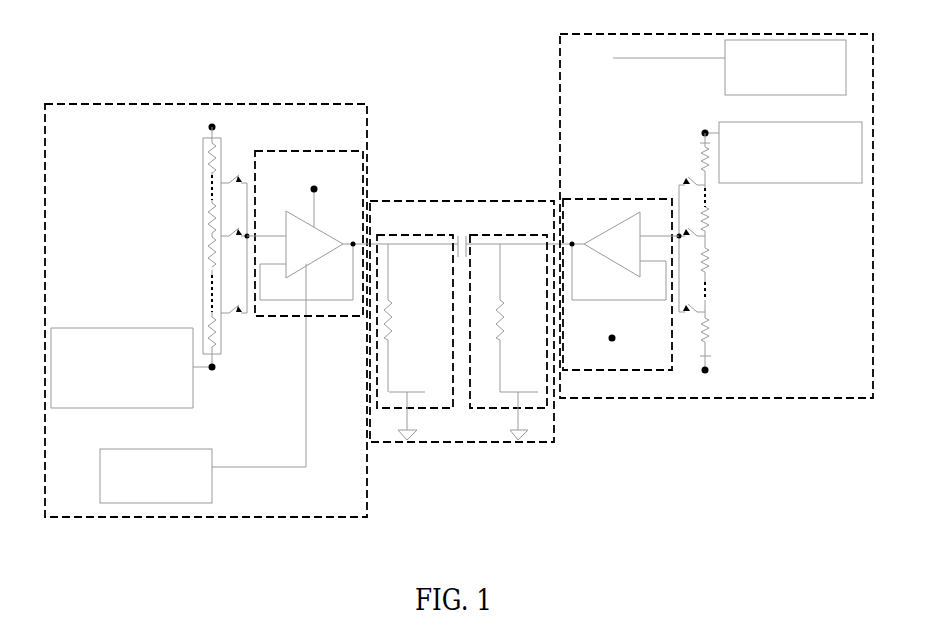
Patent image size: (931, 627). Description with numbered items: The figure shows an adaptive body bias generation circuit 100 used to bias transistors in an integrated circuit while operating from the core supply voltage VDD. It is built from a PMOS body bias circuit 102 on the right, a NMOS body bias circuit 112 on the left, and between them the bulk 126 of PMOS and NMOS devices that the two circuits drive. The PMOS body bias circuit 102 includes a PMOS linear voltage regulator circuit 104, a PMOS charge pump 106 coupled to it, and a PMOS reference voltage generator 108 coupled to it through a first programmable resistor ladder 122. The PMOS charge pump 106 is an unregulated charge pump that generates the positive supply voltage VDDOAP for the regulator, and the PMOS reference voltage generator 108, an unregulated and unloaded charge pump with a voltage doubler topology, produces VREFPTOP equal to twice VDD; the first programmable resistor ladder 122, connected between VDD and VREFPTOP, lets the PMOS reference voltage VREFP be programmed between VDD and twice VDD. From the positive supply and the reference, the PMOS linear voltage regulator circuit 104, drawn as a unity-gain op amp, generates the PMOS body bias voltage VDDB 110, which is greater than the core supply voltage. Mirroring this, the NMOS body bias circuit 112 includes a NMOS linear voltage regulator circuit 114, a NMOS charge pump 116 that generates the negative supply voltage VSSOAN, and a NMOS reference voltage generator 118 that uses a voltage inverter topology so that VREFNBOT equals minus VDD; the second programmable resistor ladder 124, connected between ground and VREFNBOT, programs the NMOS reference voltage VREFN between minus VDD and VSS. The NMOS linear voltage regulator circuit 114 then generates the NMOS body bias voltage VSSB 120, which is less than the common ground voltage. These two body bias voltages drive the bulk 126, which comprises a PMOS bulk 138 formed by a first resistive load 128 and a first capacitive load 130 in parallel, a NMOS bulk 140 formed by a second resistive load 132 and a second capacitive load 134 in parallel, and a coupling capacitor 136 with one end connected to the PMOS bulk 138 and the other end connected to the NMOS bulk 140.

The adaptive body bias generation circuit 100 is at (685, 504).
The PMOS body bias circuit 102 is at (560, 44).
The PMOS linear voltage regulator circuit 104 is at (637, 370).
The PMOS charge pump 106 is at (720, 111).
The PMOS reference voltage generator 108 is at (783, 152).
The VDDB 110 is at (622, 285).
The NMOS body bias circuit 112 is at (367, 515).
The NMOS linear voltage regulator circuit 114 is at (293, 151).
The NMOS charge pump 116 is at (203, 383).
The NMOS reference voltage generator 118 is at (133, 368).
The VSSB 120 is at (352, 233).
The first programmable resistor ladder 122 is at (712, 329).
The second programmable resistor ladder 124 is at (203, 164).
The bulk of PMOS and NMOS devices 126 is at (470, 199).
The first resistive load 128 is at (540, 308).
The first capacitive load 130 is at (519, 349).
The second resistive load 132 is at (438, 308).
The second capacitive load 134 is at (418, 349).
The coupling capacitor 136 is at (482, 236).
The PMOS bulk 138 is at (525, 408).
The NMOS bulk 140 is at (425, 408).